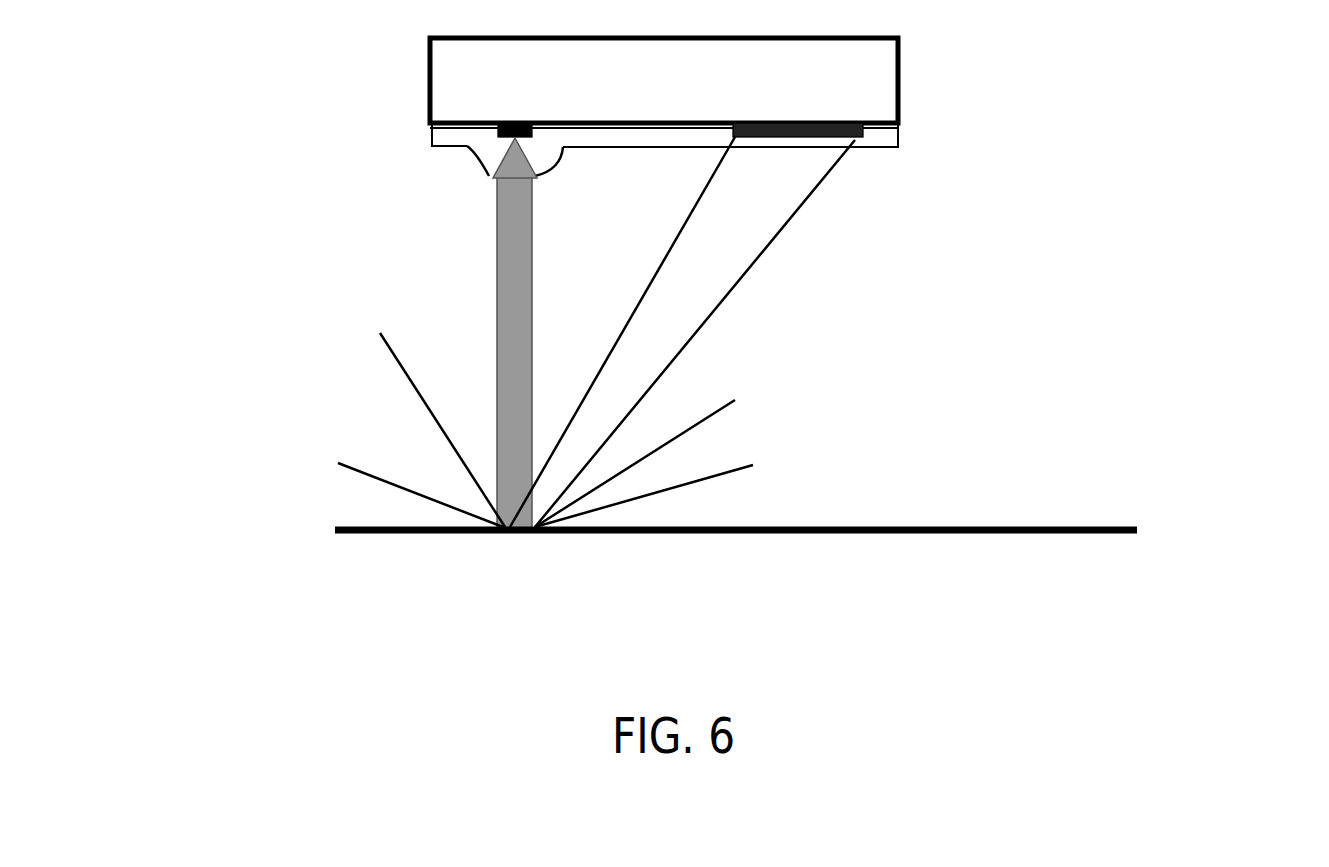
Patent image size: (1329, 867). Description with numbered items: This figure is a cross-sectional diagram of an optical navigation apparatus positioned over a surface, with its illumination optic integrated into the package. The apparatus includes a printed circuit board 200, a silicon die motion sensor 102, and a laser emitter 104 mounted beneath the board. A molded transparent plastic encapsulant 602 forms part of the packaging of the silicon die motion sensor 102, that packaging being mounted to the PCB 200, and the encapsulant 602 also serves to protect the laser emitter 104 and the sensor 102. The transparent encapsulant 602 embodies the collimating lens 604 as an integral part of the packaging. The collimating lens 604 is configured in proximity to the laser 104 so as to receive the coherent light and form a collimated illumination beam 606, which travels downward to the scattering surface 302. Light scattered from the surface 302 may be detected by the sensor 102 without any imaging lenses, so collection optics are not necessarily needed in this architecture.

The printed circuit board 200 is at (664, 80).
The laser emitter 104 is at (430, 128).
The silicon die motion sensor 102 is at (898, 128).
The transparent encapsulant 602 is at (640, 137).
The collimating lens 604 is at (500, 148).
The collimated illumination beam 606 is at (512, 345).
The scattering surface 302 is at (816, 546).